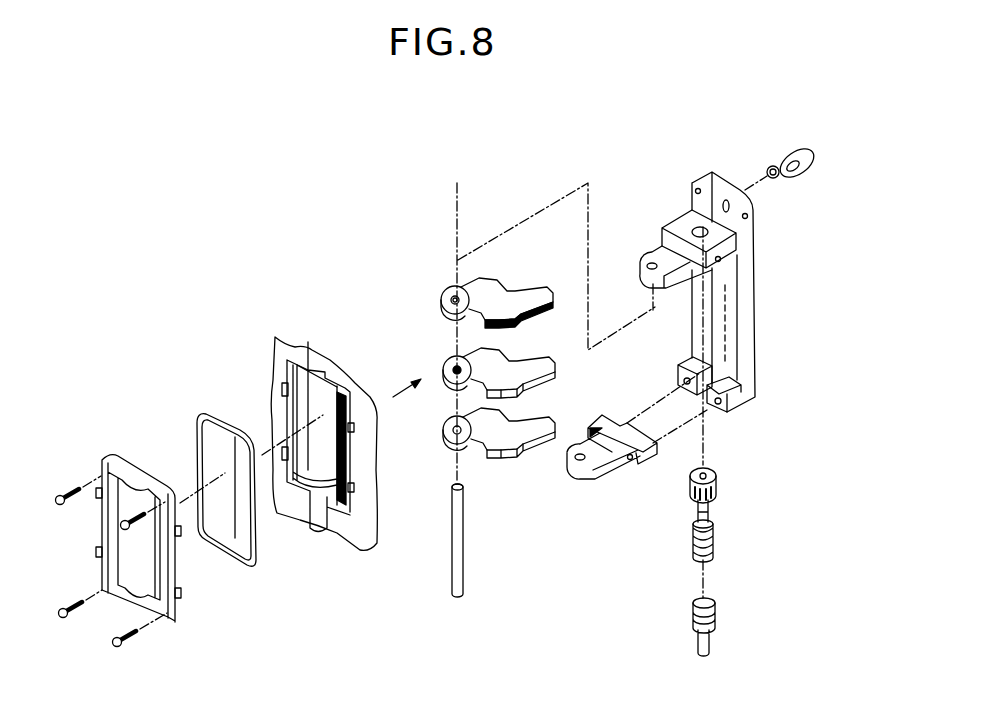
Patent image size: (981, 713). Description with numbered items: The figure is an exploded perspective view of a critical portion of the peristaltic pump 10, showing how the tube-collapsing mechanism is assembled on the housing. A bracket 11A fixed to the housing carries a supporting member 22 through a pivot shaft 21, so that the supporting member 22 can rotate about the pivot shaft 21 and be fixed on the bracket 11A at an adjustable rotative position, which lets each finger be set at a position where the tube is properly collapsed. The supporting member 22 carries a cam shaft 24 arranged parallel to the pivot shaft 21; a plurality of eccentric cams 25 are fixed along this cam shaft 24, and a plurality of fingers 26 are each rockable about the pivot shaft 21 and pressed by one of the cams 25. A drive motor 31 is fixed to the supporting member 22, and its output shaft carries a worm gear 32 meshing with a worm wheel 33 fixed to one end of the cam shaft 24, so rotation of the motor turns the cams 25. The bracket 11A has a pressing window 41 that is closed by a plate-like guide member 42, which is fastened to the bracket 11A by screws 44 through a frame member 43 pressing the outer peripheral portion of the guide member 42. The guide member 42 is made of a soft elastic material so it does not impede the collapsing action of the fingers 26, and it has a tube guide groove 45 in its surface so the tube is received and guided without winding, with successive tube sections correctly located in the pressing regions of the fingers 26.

The peristaltic pump 10 is at (325, 328).
The bracket 11A is at (345, 533).
The pivot shaft 21 is at (465, 553).
The supporting member 22 is at (745, 316).
The cam shaft 24 is at (713, 641).
The eccentric cams 25 is at (715, 547).
The fingers 26 is at (520, 300).
The drive motor 31 is at (793, 150).
The worm gear 32 is at (767, 166).
The worm wheel 33 is at (717, 472).
The pressing window 41 is at (287, 373).
The guide member 42 is at (197, 437).
The frame member 43 is at (100, 538).
The screws 44 is at (63, 618).
The tube guide groove 45 is at (247, 504).